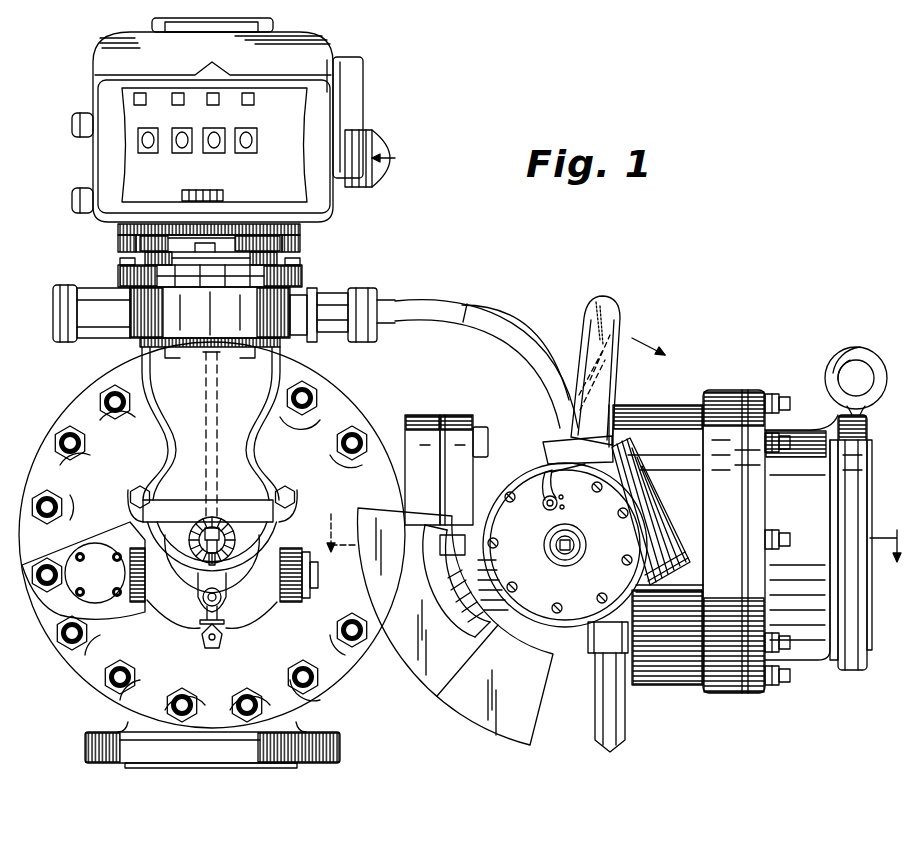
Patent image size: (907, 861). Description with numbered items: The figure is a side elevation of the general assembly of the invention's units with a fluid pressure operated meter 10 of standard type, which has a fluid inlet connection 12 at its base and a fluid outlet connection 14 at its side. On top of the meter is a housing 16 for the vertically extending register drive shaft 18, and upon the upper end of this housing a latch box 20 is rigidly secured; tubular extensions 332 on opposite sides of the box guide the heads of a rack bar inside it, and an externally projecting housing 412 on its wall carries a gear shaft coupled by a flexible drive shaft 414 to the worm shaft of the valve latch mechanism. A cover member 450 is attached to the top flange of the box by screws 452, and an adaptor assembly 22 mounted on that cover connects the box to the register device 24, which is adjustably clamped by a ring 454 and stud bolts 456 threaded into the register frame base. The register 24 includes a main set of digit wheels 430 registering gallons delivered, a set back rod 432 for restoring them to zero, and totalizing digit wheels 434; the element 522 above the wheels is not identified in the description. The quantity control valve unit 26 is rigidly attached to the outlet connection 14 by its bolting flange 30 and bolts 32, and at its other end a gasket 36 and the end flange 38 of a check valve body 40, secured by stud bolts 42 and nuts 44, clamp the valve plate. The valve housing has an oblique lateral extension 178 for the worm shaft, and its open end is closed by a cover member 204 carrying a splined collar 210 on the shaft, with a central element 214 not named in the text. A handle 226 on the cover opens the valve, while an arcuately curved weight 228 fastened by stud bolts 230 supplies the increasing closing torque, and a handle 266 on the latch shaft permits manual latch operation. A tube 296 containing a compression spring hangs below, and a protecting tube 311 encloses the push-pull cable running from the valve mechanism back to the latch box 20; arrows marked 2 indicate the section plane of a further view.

The section line 2- 2 is at (614, 528).
The fluid pressure operated meter 10 is at (38, 468).
The fluid inlet connection 12 is at (340, 746).
The fluid outlet connection 14 is at (418, 415).
The housing 16 is at (265, 452).
The register drive shaft 18 is at (200, 422).
The latch box 20 is at (140, 303).
The adaptor assembly 22 is at (300, 242).
The register device 24 is at (320, 128).
The quantity control valve unit 26 is at (640, 404).
The bolting flange 30 is at (448, 415).
The bolts 32 is at (482, 437).
The gasket 36 is at (745, 466).
The end flange 38 is at (768, 396).
The check valve body 40 is at (808, 438).
The stud bolts 42 is at (790, 676).
The nuts 44 is at (770, 693).
The lateral extension 178 is at (652, 515).
The cover member 204 is at (644, 604).
The collar 210 is at (548, 548).
The hub 214 is at (586, 545).
The handle 226 is at (612, 306).
The weight 228 is at (425, 688).
The stud bolts 230 is at (447, 577).
The handle 266 is at (562, 495).
The tube 296 is at (612, 700).
The protecting tube 311 is at (543, 317).
The tubular extensions 332 is at (100, 335).
The externally projecting housing 412 is at (316, 330).
The flexible drive shaft 414 is at (471, 305).
The main set of digit wheels 430 is at (238, 150).
The set back rod 432 is at (358, 190).
The totalizing digit wheels 434 is at (200, 190).
The cover member 450 is at (301, 272).
The screws 452 is at (120, 262).
The ring 454 is at (118, 240).
The stud bolts 456 is at (300, 229).
The digit wheels 522 is at (242, 99).